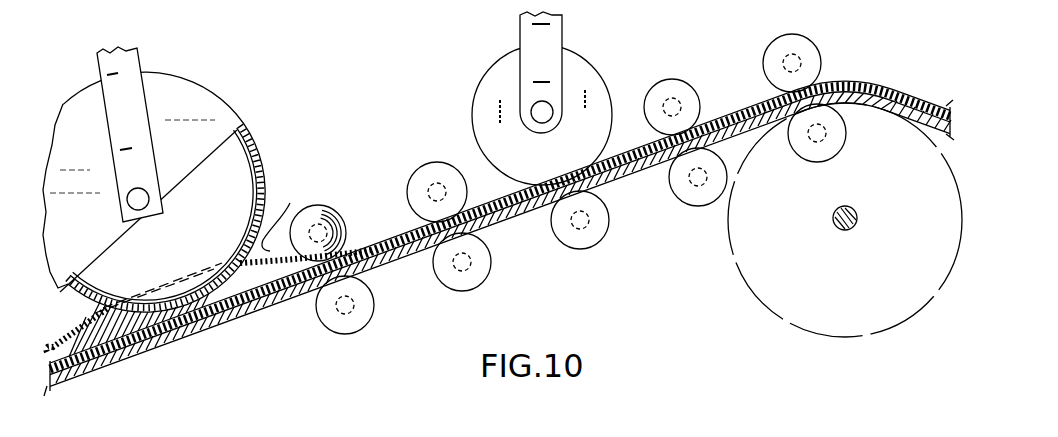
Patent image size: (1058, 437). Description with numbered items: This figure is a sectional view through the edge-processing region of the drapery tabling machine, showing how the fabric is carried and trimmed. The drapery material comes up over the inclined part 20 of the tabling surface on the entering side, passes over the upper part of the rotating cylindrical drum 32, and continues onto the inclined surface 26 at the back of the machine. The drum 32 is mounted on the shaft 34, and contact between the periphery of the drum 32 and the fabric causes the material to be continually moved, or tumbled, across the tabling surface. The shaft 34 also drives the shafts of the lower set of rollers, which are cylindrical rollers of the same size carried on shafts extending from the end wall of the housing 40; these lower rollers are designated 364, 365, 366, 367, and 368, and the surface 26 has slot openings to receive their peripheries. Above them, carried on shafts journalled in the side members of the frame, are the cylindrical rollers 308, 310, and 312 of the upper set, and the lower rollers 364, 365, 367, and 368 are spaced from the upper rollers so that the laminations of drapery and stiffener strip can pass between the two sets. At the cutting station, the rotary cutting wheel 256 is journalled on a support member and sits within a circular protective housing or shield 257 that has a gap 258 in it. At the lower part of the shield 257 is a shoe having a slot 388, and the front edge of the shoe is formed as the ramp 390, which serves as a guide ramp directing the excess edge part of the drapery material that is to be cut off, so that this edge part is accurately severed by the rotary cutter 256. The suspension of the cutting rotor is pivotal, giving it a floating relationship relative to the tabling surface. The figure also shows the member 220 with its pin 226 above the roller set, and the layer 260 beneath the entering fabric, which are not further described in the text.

The inclined part 20 is at (925, 132).
The inclined surface 26 is at (104, 371).
The cylindrical drum 32 is at (746, 283).
The shaft 34 is at (322, 209).
The housing 40 is at (268, 392).
The pivot arm 220 is at (523, 98).
The pivot pin 226 is at (546, 120).
The rotary cutting wheel 256 is at (114, 78).
The protective housing or shield 257 is at (152, 92).
The gap 258 is at (285, 210).
The adhesive layer 260 is at (113, 325).
The cylindrical roller 308 is at (793, 47).
The cylindrical roller 310 is at (672, 92).
The cylindrical roller 312 is at (425, 178).
The lower roller 364 is at (812, 150).
The lower roller 365 is at (700, 198).
The lower roller 366 is at (582, 236).
The lower roller 367 is at (462, 276).
The lower roller 368 is at (350, 320).
The slot 388 is at (171, 282).
The guide ramp 390 is at (282, 266).